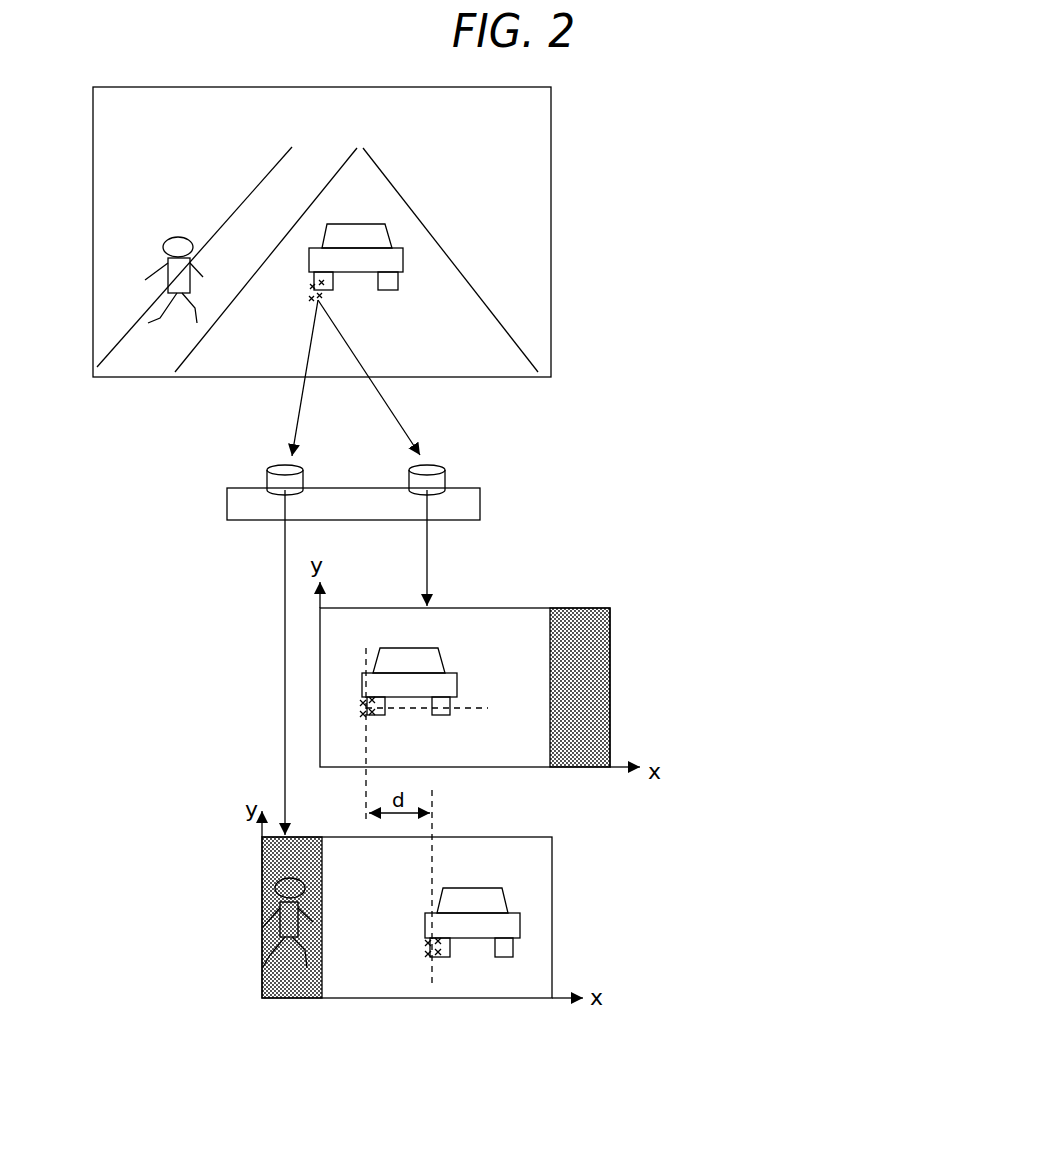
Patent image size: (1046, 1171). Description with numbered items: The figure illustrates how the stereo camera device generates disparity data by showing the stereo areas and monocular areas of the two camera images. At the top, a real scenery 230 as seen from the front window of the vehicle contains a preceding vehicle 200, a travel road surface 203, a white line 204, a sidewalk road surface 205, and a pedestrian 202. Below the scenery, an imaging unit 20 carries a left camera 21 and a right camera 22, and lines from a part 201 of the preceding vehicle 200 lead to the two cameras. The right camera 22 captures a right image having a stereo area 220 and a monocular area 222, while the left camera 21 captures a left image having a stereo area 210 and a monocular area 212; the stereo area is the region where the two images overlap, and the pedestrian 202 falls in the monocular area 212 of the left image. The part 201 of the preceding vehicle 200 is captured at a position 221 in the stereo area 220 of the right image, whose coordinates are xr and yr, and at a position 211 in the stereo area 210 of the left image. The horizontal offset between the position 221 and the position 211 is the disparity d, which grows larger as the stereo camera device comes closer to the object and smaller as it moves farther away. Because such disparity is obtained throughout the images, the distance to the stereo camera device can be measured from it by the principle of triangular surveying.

The imaging unit 20 is at (227, 502).
The left camera 21 is at (303, 470).
The right camera 22 is at (440, 465).
The preceding vehicle 200 is at (340, 224).
The part of the preceding vehicle 201 is at (320, 285).
The pedestrian 202 is at (185, 235).
The travel road surface 203 is at (432, 297).
The white line 204 is at (337, 170).
The sidewalk road surface 205 is at (268, 200).
The real scenery 230 is at (551, 195).
The stereo area in right image 220 is at (467, 608).
The position in the stereo area in the right image 221 is at (375, 715).
The monocular area in right image 222 is at (578, 767).
The stereo area in left image 210 is at (490, 1000).
The position in the stereo area in the left image 211 is at (427, 927).
The monocular area in left image 212 is at (280, 1000).